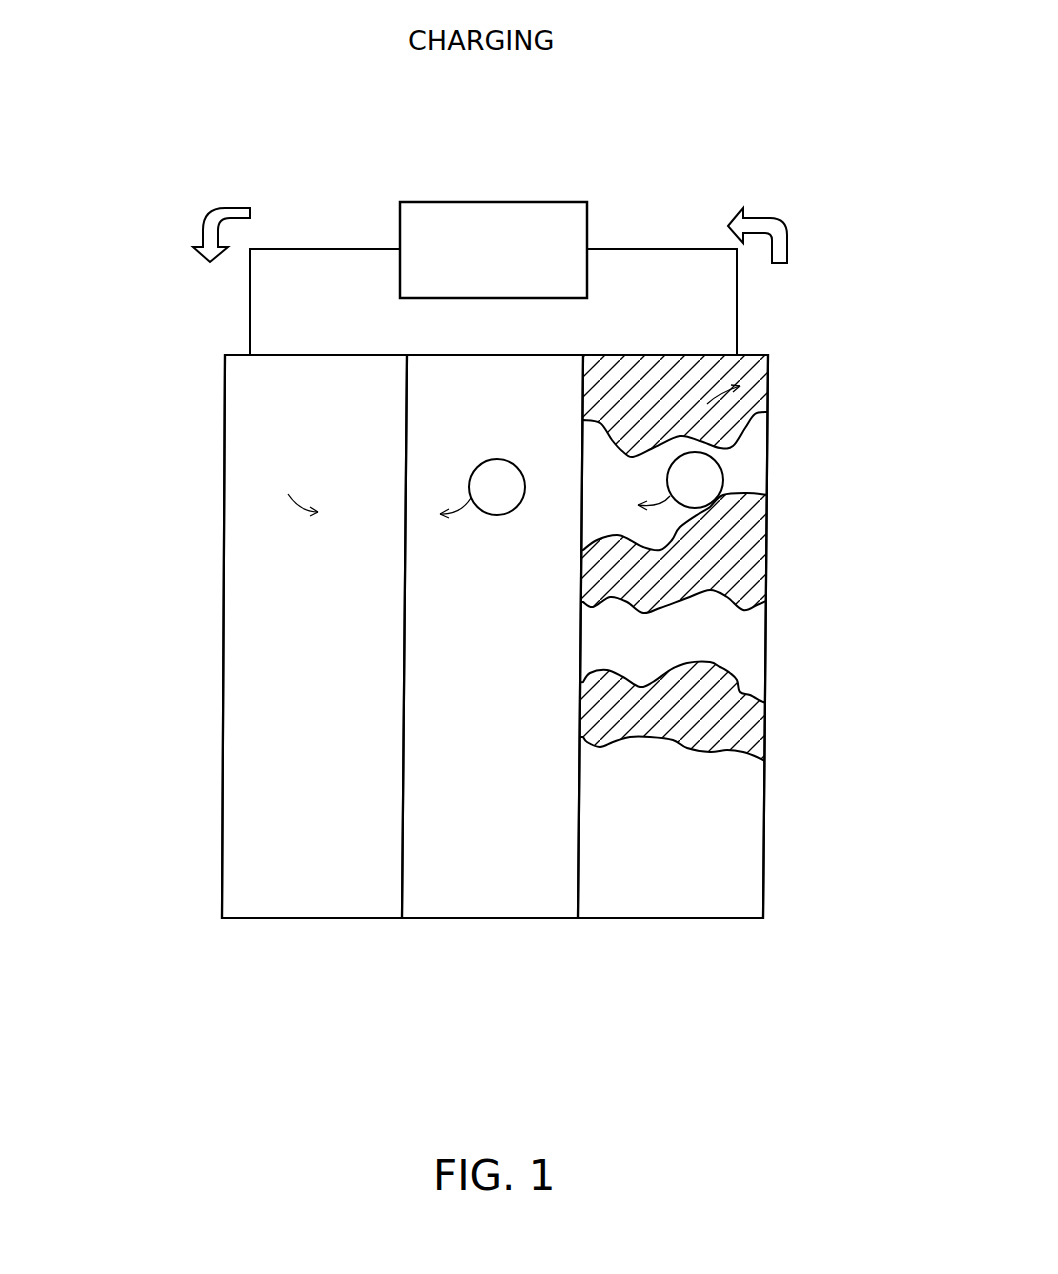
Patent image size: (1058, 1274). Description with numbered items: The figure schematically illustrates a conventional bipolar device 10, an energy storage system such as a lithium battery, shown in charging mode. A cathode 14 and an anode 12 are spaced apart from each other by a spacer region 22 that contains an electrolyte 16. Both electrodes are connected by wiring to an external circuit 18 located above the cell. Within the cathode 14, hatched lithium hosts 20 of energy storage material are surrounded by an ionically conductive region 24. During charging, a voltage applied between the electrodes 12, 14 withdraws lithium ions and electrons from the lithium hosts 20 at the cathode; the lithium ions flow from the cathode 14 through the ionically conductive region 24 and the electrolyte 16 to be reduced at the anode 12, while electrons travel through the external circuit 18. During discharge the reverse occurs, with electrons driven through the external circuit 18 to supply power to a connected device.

The bipolar device 10 is at (77, 205).
The anode 12 is at (316, 907).
The cathode 14 is at (675, 905).
The electrolyte 16 is at (493, 905).
The external circuit 18 is at (551, 202).
The lithium hosts 20 is at (760, 385).
The spacer region 22 is at (498, 650).
The ionically conductive region 24 is at (620, 499).